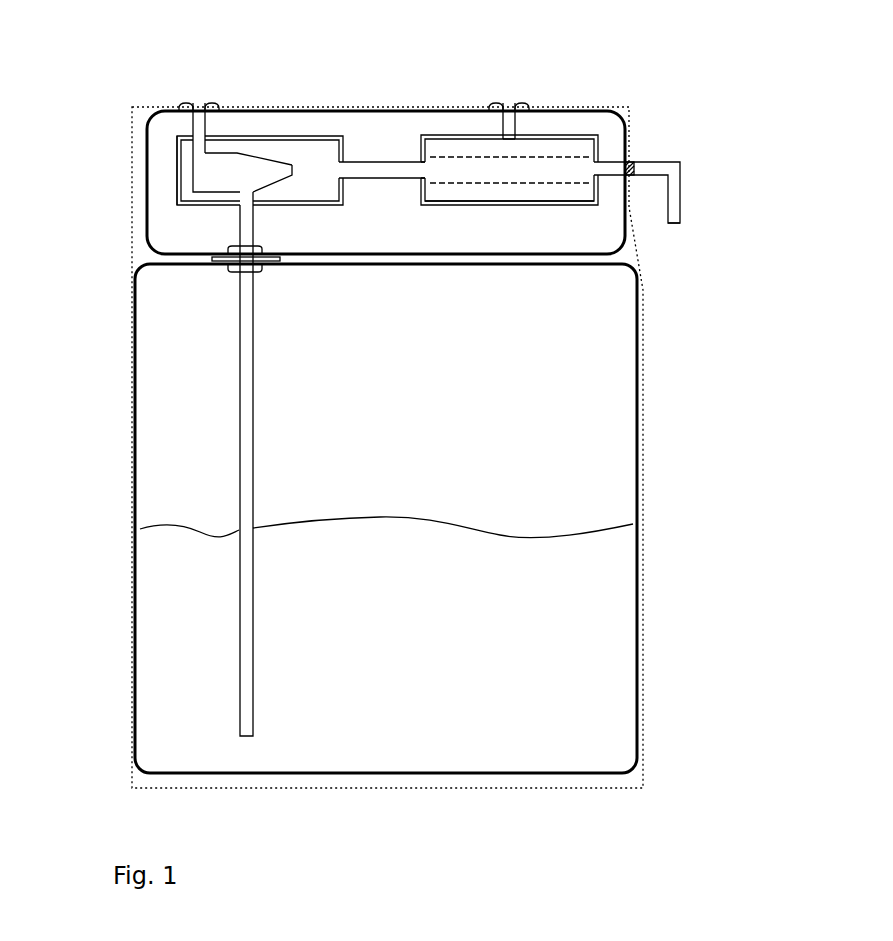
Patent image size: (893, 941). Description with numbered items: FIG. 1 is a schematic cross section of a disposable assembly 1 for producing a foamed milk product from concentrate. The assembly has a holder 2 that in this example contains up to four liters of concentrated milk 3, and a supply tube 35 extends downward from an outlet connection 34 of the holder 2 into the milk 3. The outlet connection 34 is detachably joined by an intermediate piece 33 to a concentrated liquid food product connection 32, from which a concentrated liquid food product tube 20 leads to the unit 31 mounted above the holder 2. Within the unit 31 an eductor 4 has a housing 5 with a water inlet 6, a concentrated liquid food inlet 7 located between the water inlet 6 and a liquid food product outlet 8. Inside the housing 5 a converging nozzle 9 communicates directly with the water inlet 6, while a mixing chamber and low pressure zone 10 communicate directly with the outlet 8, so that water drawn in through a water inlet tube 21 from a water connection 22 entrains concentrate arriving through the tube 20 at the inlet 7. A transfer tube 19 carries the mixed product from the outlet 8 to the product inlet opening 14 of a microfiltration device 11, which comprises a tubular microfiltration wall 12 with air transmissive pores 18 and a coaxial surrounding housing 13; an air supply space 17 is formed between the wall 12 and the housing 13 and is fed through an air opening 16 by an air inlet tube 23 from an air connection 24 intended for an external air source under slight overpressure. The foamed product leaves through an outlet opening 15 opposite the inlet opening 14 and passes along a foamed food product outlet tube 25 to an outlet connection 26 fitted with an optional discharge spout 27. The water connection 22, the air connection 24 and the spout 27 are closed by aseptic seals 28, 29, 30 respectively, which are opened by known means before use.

The disposable assembly 1 is at (649, 435).
The holder 2 is at (633, 553).
The milk 3 is at (414, 634).
The eductor 4 is at (235, 128).
The housing 5 is at (192, 207).
The water inlet 6 is at (193, 138).
The concentrated liquid food inlet 7 is at (254, 205).
The liquid food product outlet 8 is at (347, 182).
The converging nozzle 9 is at (253, 157).
The low pressure zone 10 is at (305, 174).
The microfiltration device 11 is at (463, 130).
The microfiltration wall 12 is at (455, 184).
The housing 13 is at (475, 206).
The product inlet opening 14 is at (425, 173).
The outlet opening 15 is at (600, 163).
The air opening 16 is at (509, 138).
The air supply space 17 is at (445, 153).
The air transmissive pores 18 is at (573, 184).
The transfer tube 19 is at (382, 180).
The concentrated liquid food product tube 20 is at (240, 228).
The water inlet tube 21 is at (190, 124).
The water connection 22 is at (185, 104).
The air inlet tube 23 is at (521, 103).
The air connection 24 is at (495, 102).
The foamed food product outlet tube 25 is at (610, 177).
The outlet connection 26 is at (632, 157).
The discharge spout 27 is at (674, 196).
The aseptic seal 28 is at (198, 104).
The aseptic seal 29 is at (510, 102).
The aseptic seal 30 is at (676, 224).
The unit 31 is at (152, 198).
The concentrated liquid food product connection 32 is at (228, 251).
The intermediate piece 33 is at (273, 262).
The outlet connection 34 is at (229, 270).
The supply tube 35 is at (240, 441).